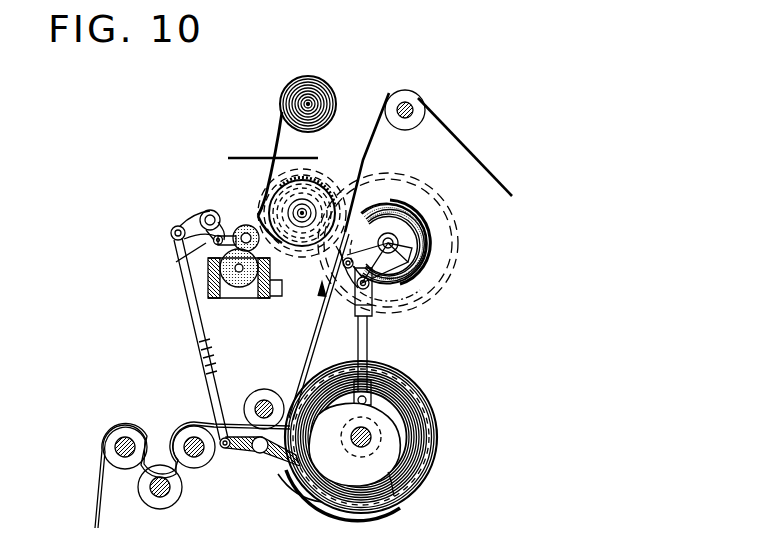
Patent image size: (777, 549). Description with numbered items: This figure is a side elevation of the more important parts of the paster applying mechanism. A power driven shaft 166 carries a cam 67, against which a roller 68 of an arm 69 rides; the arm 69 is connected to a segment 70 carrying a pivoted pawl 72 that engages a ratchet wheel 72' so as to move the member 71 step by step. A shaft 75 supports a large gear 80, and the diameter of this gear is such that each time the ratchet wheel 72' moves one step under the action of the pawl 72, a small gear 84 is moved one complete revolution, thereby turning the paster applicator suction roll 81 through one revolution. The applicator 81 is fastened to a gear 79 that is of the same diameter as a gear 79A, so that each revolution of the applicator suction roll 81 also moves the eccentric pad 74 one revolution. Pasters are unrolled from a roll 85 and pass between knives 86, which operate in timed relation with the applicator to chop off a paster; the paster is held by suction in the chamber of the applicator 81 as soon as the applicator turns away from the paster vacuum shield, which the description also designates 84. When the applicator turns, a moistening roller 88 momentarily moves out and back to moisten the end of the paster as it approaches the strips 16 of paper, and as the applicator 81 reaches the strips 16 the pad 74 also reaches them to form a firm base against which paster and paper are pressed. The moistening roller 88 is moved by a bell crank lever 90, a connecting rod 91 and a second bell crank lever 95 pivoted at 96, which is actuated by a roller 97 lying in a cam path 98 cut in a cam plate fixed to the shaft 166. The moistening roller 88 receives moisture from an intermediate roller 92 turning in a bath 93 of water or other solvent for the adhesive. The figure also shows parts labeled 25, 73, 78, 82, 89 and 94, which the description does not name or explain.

The strips of paper 16 is at (366, 164).
The guide pulley 25 is at (406, 92).
The cam 67 is at (386, 474).
The roller 68 is at (372, 400).
The arm 69 is at (368, 353).
The segment 70 is at (378, 300).
The member 71 is at (425, 230).
The pivoted pawl 72 is at (320, 326).
The ratchet wheel 72' is at (440, 273).
The drum 73 is at (420, 181).
The eccentric pad 74 is at (424, 262).
The shaft 75 is at (418, 247).
The pivot link 78 is at (338, 252).
The gear 79 is at (346, 270).
The gear 79A is at (415, 292).
The large gear 80 is at (440, 205).
The paster applicator suction roll 81 is at (246, 224).
The tape feed point 82 is at (258, 204).
The small gear 84 is at (305, 185).
The roll 85 is at (326, 99).
The knives 86 is at (273, 177).
The moistening roller 88 is at (238, 228).
The pivot pin 89 is at (176, 259).
The bell crank lever 90 is at (185, 226).
The connecting rod 91 is at (194, 306).
The intermediate roller 92 is at (250, 288).
The bath 93 is at (242, 290).
The bracket arm 94 is at (275, 286).
The second bell crank lever 95 is at (226, 449).
The pivot 96 is at (258, 454).
The roller 97 is at (330, 503).
The cam path 98 is at (438, 462).
The power driven shaft 166 is at (364, 450).